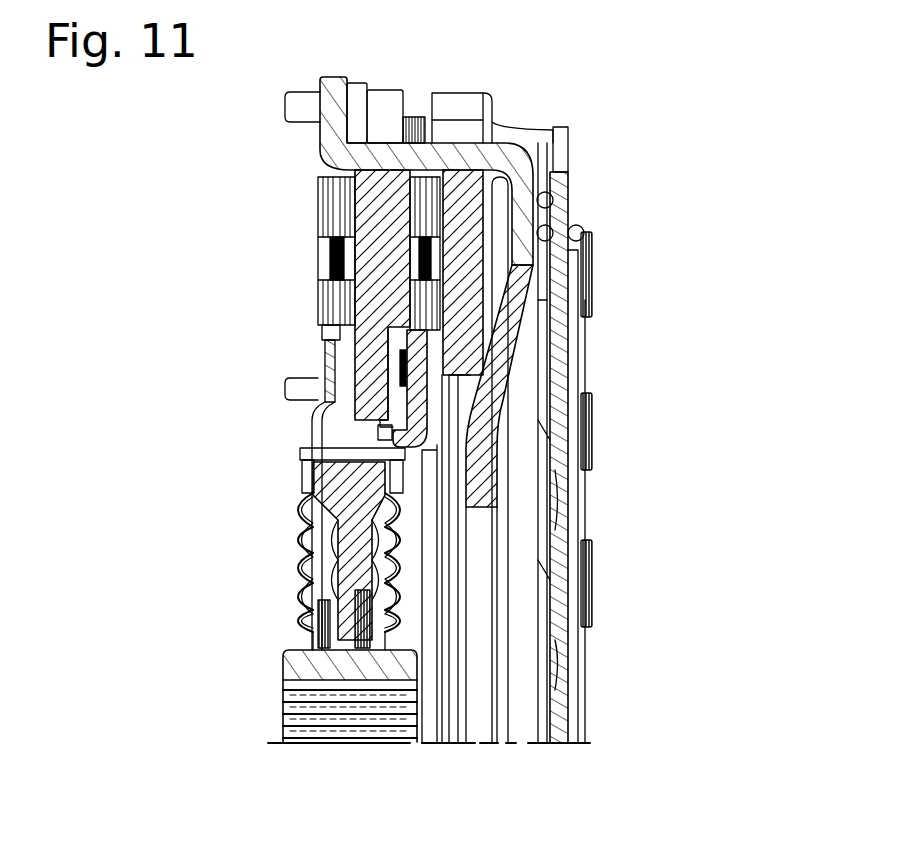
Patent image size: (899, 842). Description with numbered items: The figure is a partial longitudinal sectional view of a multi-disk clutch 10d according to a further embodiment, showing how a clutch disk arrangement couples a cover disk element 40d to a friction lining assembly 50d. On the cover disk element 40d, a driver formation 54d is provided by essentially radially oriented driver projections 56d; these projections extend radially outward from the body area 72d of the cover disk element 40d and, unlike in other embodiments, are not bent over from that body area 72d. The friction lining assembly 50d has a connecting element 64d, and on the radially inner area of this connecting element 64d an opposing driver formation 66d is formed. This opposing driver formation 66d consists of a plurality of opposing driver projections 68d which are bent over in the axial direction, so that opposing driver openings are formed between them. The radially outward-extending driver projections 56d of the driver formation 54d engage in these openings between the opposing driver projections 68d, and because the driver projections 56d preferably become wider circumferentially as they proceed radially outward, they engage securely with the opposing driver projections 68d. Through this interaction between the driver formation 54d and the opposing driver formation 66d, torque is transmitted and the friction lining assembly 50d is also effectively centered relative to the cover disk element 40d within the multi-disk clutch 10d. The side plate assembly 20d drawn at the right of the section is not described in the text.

The multi-disk clutch 10d is at (613, 76).
The friction lining assembly 50d is at (466, 252).
The driver formation 54d is at (320, 358).
The driver projections 56d is at (372, 404).
The connecting element 64d is at (413, 357).
The opposing driver formation 66d is at (428, 438).
The body area 72d is at (387, 520).
The opposing driver projections 68d is at (347, 460).
The cover disk element 40d is at (383, 578).
The side plate assembly 20d is at (564, 435).